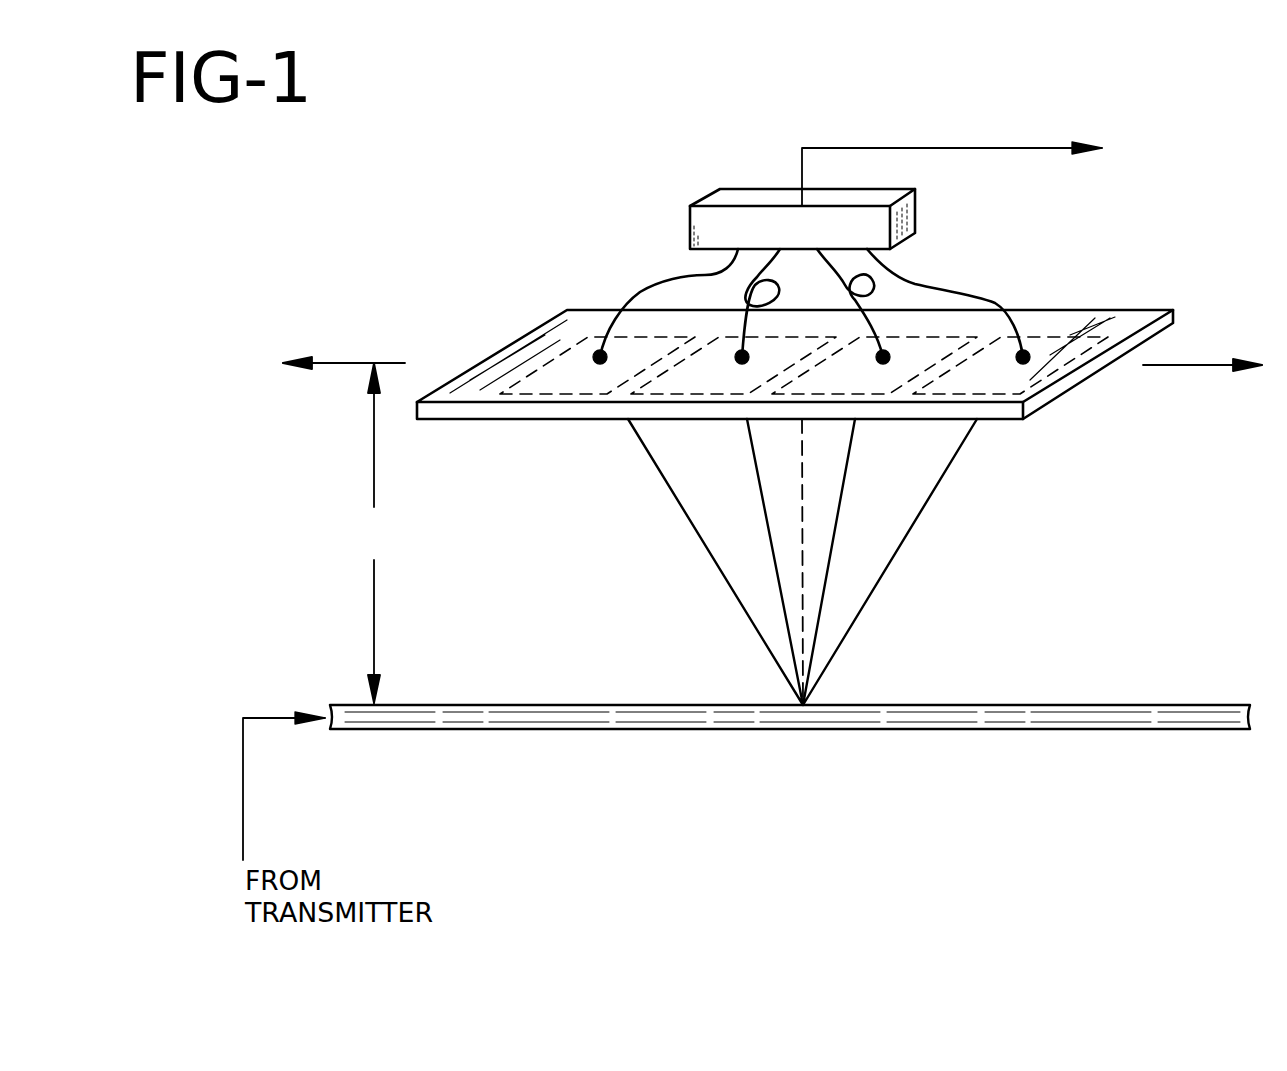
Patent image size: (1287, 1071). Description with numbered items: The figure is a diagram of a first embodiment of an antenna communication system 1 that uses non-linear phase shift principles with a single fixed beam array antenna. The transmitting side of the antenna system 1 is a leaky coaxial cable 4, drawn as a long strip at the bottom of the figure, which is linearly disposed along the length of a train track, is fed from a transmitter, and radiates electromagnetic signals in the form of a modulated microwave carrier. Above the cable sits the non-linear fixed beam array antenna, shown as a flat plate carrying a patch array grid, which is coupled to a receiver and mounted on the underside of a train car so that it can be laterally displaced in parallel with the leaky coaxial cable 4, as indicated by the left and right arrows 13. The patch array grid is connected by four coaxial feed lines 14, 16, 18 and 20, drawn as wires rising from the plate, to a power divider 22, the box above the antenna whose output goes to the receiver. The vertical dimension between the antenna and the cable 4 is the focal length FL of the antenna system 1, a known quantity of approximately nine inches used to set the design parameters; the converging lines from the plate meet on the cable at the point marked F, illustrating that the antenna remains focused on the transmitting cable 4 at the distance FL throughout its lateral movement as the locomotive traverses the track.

The antenna communication system 1 is at (1013, 822).
The leaky coaxial cable 4 is at (1098, 717).
The left and right arrows 13 is at (343, 362).
The coaxial feed line 14 is at (630, 297).
The coaxial feed line 16 is at (757, 277).
The coaxial feed line 18 is at (920, 287).
The coaxial feed line 20 is at (1000, 289).
The power divider 22 is at (907, 218).
The focal point F is at (808, 704).
The focal length FL is at (372, 533).